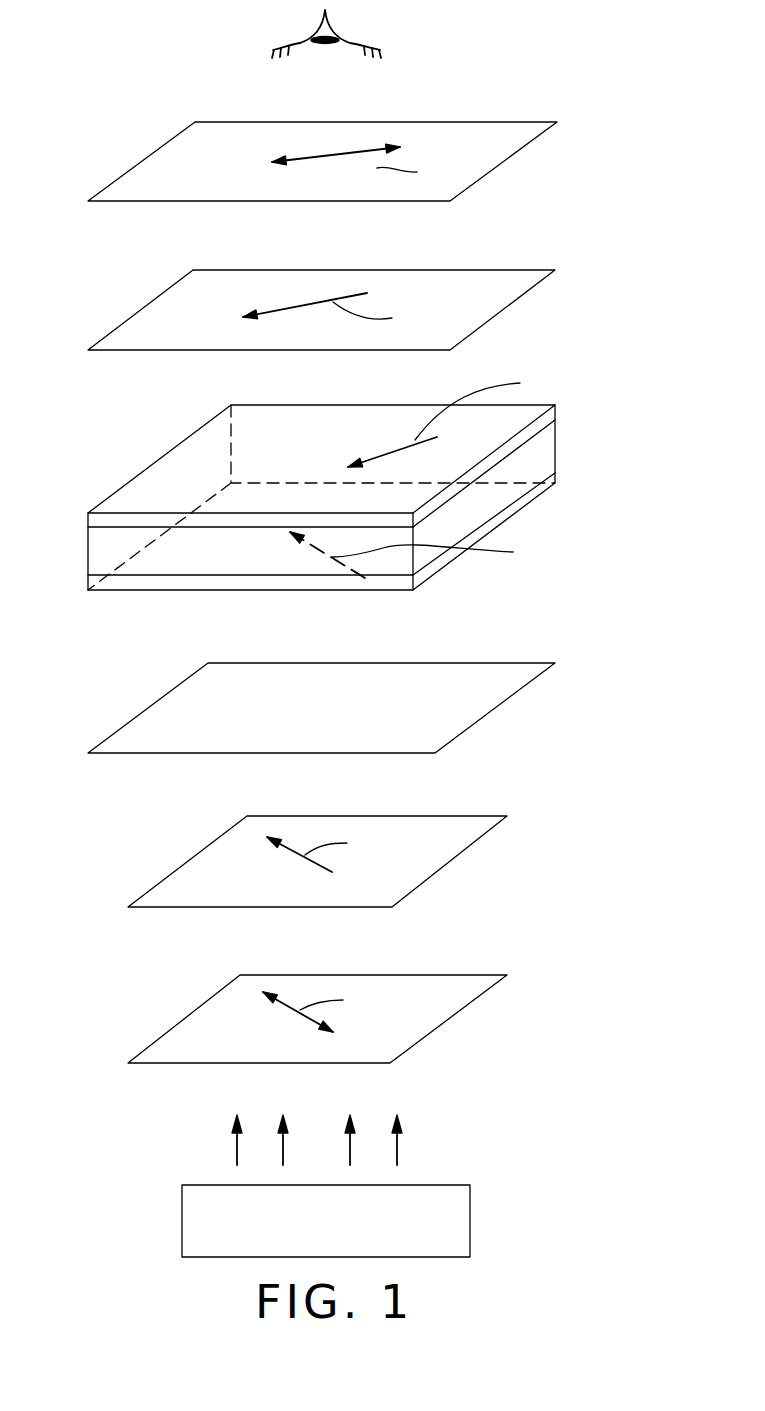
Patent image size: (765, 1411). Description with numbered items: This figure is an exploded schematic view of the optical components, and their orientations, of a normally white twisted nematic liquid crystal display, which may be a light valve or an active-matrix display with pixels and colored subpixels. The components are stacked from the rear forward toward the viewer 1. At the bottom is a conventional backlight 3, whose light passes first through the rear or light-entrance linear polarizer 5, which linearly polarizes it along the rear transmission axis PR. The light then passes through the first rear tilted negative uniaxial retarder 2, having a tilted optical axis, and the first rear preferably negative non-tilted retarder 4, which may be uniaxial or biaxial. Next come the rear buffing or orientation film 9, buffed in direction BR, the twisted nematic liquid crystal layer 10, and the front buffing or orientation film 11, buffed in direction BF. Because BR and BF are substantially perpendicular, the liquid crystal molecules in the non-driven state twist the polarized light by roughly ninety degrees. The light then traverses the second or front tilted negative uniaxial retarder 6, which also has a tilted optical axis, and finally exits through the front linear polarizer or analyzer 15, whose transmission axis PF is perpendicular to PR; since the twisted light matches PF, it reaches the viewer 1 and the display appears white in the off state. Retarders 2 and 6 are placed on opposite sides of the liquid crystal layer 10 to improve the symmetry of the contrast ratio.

The viewer 1 is at (355, 40).
The front linear polarizer (analyzer) 15 is at (518, 133).
The second or front tilted negative uniaxial retarder 6 is at (515, 283).
The twisted nematic liquid crystal layer 10 is at (331, 500).
The front buffing or orientation film 11 is at (107, 518).
The rear buffing or orientation film 9 is at (155, 585).
The first rear non-tilted retarder 4 is at (503, 685).
The first rear tilted negative uniaxial retarder 2 is at (475, 828).
The rear or light-entrance linear polarizer 5 is at (472, 988).
The backlight 3 is at (465, 1232).